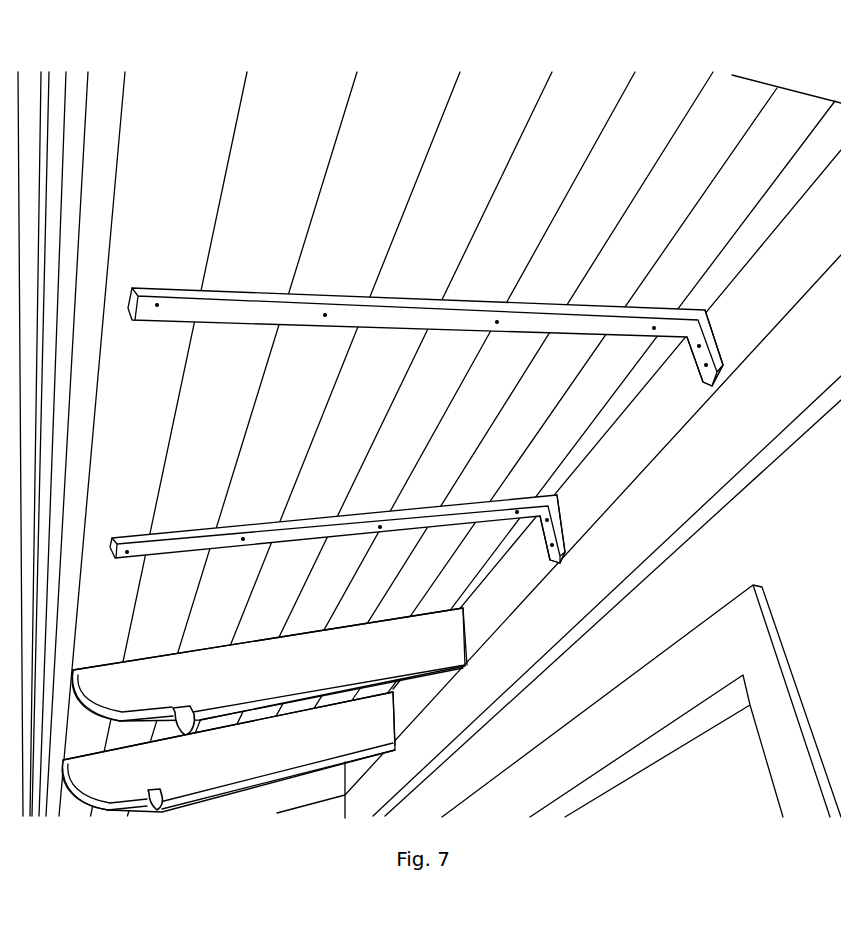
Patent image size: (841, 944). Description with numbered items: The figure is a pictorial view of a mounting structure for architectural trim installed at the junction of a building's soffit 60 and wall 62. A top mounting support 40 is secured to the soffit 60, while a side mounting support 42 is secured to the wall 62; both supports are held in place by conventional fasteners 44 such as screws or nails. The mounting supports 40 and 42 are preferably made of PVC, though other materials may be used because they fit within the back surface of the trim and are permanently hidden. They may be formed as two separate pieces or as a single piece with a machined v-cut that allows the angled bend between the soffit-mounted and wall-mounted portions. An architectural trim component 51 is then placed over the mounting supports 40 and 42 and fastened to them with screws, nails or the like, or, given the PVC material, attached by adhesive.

The top mounting support 40 is at (376, 319).
The side mounting support 42 is at (723, 365).
The fasteners 44 is at (157, 306).
The architectural trim component 51 is at (457, 665).
The soffit 60 is at (466, 444).
The wall 62 is at (607, 445).